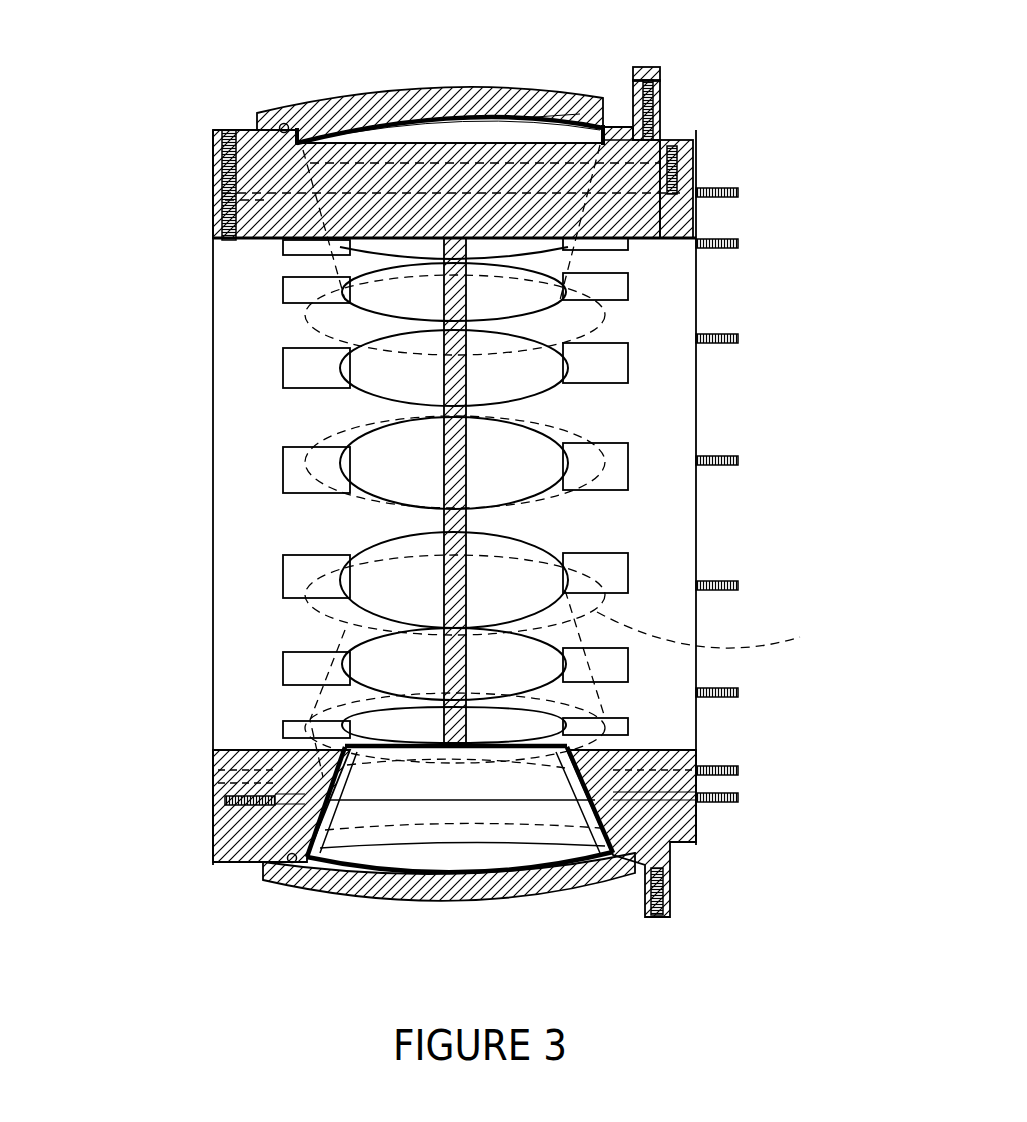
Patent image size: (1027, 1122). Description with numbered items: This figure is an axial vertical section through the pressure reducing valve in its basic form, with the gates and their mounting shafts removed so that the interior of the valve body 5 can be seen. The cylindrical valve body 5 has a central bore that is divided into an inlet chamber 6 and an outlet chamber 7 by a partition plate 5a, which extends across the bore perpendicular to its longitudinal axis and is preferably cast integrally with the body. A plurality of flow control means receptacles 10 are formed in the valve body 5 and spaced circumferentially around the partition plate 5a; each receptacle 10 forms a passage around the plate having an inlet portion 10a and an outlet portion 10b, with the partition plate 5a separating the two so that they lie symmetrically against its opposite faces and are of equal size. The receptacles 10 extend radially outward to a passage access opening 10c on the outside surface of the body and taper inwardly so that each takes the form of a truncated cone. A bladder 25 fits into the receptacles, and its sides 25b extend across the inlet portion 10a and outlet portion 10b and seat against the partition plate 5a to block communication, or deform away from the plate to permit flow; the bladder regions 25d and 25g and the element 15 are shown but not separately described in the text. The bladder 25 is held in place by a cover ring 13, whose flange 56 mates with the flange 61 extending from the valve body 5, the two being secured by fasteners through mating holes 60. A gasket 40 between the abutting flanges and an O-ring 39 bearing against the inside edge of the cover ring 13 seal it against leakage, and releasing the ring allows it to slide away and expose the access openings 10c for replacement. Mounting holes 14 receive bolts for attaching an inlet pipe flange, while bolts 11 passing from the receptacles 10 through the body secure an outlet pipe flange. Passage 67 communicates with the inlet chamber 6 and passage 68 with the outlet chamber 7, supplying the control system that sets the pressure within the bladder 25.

The valve body 5 is at (212, 128).
The partition plate 5a is at (440, 470).
The inlet chamber 6 is at (248, 470).
The outlet chamber 7 is at (653, 467).
The flow control means receptacle 10 is at (267, 188).
The inlet portion 10a is at (398, 722).
The outlet portion 10b is at (510, 722).
The passage access opening 10c is at (729, 634).
The bolt 11 is at (742, 795).
The cover ring 13 is at (392, 92).
The mounting hole 14 is at (225, 798).
The baffle 15 is at (300, 676).
The bladder 25 is at (437, 97).
The bladder side 25b is at (423, 750).
The lens surface 25d is at (487, 140).
The lens gasket 25g is at (545, 115).
The O-ring 39 is at (270, 116).
The gasket 40 is at (665, 866).
The flange 56 is at (650, 122).
The mating hole 60 is at (633, 90).
The flange 61 is at (648, 68).
The passage 67 is at (228, 128).
The passage 68 is at (667, 142).